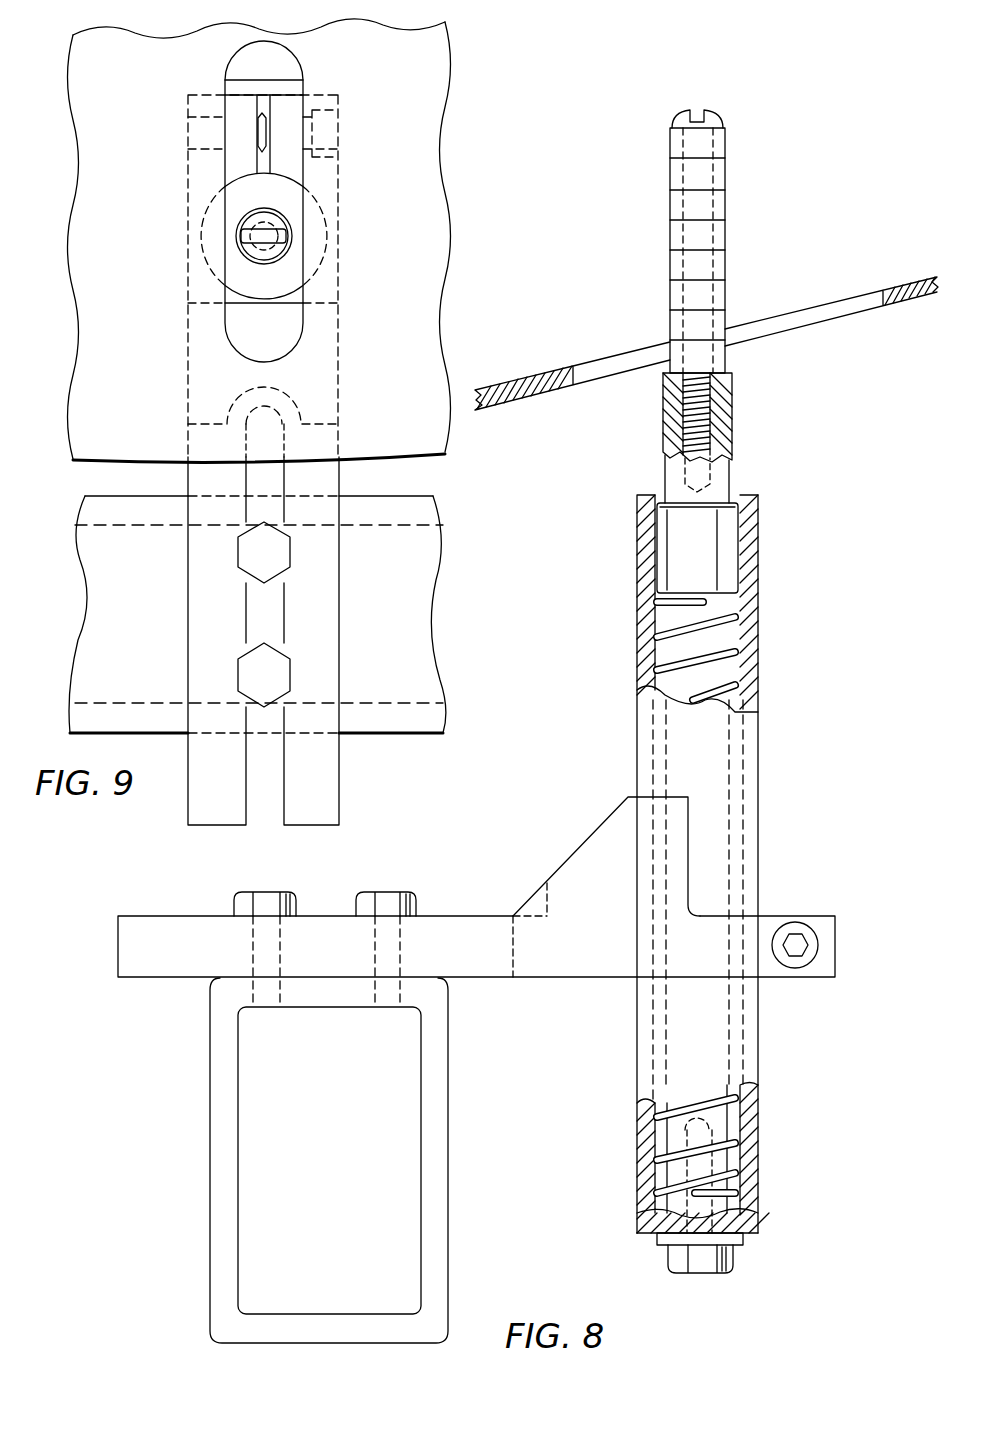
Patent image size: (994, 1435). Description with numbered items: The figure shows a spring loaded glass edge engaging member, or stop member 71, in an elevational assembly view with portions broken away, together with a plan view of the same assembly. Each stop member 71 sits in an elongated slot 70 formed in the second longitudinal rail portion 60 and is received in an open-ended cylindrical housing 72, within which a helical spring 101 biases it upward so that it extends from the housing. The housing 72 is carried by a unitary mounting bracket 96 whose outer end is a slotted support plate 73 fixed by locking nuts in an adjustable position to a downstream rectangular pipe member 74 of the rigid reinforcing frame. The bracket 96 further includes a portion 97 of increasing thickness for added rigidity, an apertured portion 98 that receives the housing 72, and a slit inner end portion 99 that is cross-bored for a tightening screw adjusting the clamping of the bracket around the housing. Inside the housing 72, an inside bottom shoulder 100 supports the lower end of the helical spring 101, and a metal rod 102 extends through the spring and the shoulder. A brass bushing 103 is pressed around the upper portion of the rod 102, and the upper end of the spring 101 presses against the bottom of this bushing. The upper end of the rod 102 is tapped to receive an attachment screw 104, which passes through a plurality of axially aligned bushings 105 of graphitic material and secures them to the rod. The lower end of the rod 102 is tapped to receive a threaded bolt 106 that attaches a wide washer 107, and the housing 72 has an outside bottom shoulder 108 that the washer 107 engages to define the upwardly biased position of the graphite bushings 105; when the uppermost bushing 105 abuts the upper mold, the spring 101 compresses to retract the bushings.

In FIG. 9, the second longitudinal rail portion 60 is at (103, 387).
In FIG. 8, the second longitudinal rail portion 60 is at (532, 372).
In FIG. 9, the elongated slot 70 is at (301, 247).
In FIG. 8, the elongated slot 70 is at (845, 300).
In FIG. 9, the glass edge engagement member 71 is at (256, 274).
In FIG. 8, the glass edge engagement member 71 is at (744, 213).
In FIG. 9, the open-ended cylindrical housing 72 is at (242, 193).
In FIG. 8, the open-ended cylindrical housing 72 is at (637, 715).
In FIG. 9, the slotted support plate 73 is at (335, 790).
In FIG. 8, the slotted support plate 73 is at (162, 978).
In FIG. 9, the downstream rectangular pipe member 74 is at (93, 672).
In FIG. 8, the downstream rectangular pipe member 74 is at (210, 1147).
In FIG. 9, the mounting bracket 96 is at (275, 323).
In FIG. 8, the mounting bracket 96 is at (118, 940).
In FIG. 9, the portion of increasing thickness 97 is at (188, 362).
In FIG. 8, the portion of increasing thickness 97 is at (548, 977).
In FIG. 9, the apertured portion 98 is at (188, 275).
In FIG. 8, the apertured portion 98 is at (700, 977).
In FIG. 9, the slit inner end portion 99 is at (188, 98).
In FIG. 8, the slit inner end portion 99 is at (815, 916).
In FIG. 8, the inside bottom shoulder 100 is at (657, 1197).
In FIG. 8, the helical spring 101 is at (737, 1142).
In FIG. 8, the metal rod 102 is at (663, 472).
In FIG. 8, the brass bushing 103 is at (710, 556).
In FIG. 9, the attachment screw 104 is at (272, 228).
In FIG. 8, the attachment screw 104 is at (708, 412).
In FIG. 9, the bushing of graphitic material 105 is at (285, 222).
In FIG. 8, the bushing of graphitic material 105 is at (670, 227).
In FIG. 8, the nut 106 is at (693, 1273).
In FIG. 8, the wide washer 107 is at (657, 1245).
In FIG. 8, the outside bottom shoulder 108 is at (750, 1233).